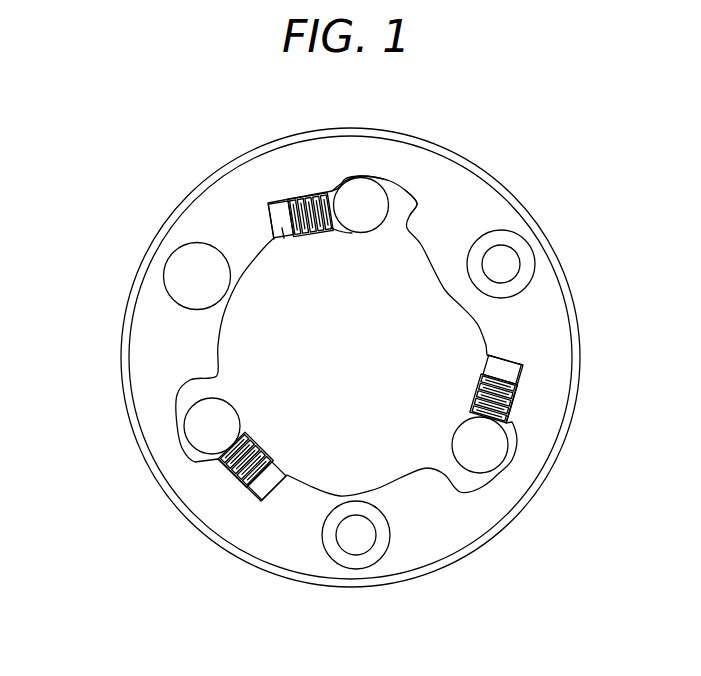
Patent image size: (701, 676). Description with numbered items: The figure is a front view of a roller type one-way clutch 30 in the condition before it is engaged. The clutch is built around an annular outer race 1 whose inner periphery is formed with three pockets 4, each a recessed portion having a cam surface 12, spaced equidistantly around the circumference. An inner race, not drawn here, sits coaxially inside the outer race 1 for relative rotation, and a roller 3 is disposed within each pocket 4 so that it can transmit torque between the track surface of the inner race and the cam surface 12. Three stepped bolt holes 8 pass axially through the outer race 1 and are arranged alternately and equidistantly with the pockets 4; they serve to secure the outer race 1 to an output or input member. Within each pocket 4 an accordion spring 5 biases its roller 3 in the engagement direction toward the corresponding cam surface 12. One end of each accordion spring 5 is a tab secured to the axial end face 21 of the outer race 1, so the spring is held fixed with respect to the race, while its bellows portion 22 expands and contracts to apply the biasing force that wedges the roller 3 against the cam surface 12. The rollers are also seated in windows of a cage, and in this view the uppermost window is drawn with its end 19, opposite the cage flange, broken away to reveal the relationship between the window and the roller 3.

The outer race 1 is at (207, 209).
The roller 3 is at (367, 188).
The pocket 4 is at (338, 181).
The accordion spring 5 is at (293, 196).
The stepped bolt hole 8 is at (372, 546).
The cam surface 12 is at (418, 200).
The end 19 is at (218, 342).
The axial end face 21 is at (148, 330).
The bellows portion 22 is at (320, 230).
The roller type one-way clutch 30 is at (461, 130).